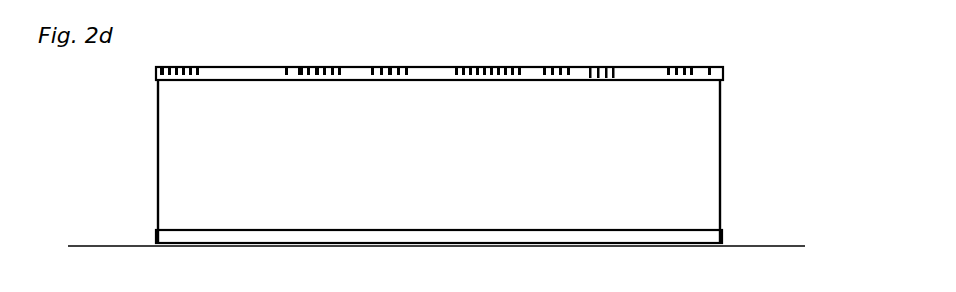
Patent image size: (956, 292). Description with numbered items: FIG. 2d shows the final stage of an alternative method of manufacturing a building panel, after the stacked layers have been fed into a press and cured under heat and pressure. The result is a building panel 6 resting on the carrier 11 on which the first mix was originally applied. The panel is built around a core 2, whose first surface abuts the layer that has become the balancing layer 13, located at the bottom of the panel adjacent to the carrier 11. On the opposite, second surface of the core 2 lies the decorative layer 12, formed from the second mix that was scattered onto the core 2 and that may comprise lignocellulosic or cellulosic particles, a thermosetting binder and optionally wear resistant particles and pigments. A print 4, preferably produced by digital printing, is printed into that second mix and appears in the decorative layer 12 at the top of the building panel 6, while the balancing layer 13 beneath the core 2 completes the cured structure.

The core 2 is at (697, 152).
The print 4 is at (313, 66).
The building panel 6 is at (206, 58).
The carrier 11 is at (752, 246).
The decorative layer 12 is at (724, 72).
The balancing layer 13 is at (722, 233).